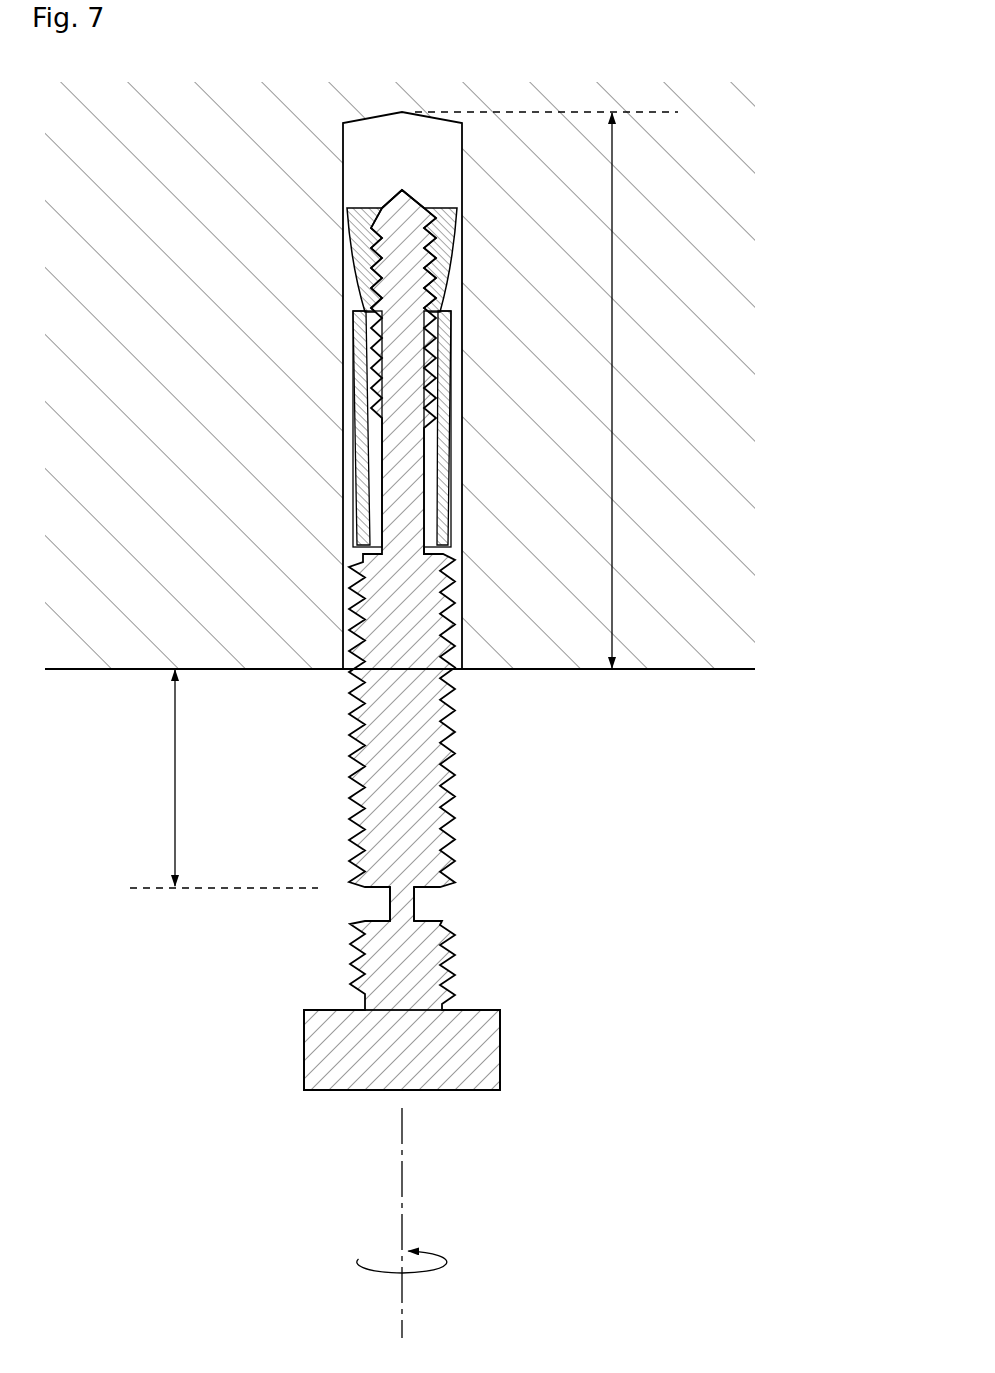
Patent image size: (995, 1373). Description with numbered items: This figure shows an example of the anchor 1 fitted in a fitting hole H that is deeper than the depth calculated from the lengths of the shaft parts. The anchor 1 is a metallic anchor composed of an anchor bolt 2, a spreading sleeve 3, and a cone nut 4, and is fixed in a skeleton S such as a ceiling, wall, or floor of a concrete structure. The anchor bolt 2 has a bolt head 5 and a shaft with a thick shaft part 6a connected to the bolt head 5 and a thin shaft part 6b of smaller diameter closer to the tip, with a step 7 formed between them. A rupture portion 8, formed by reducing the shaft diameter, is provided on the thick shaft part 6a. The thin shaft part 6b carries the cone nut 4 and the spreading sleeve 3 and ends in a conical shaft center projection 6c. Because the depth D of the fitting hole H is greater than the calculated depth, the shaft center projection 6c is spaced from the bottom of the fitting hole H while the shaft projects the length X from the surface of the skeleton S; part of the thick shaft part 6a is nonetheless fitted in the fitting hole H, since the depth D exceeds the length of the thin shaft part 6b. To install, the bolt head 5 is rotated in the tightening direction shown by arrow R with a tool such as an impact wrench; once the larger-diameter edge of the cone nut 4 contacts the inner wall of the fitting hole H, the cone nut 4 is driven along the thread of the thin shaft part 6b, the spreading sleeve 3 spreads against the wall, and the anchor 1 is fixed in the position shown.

The anchor 1 is at (372, 650).
The anchor bolt 2 is at (540, 960).
The spreading sleeve 3 is at (450, 420).
The cone nut 4 is at (453, 250).
The bolt head 5 is at (472, 1090).
The thick shaft part 6a is at (453, 750).
The thin shaft part 6b is at (370, 383).
The shaft center projection 6c is at (402, 190).
The step 7 is at (447, 549).
The rupture portion 8 is at (457, 905).
The skeleton S is at (108, 647).
The fitting hole H is at (344, 673).
The length the shaft projects from the surface of the skeleton X is at (175, 778).
The depth of the fitting hole D is at (613, 388).
The arrow R is at (447, 1258).